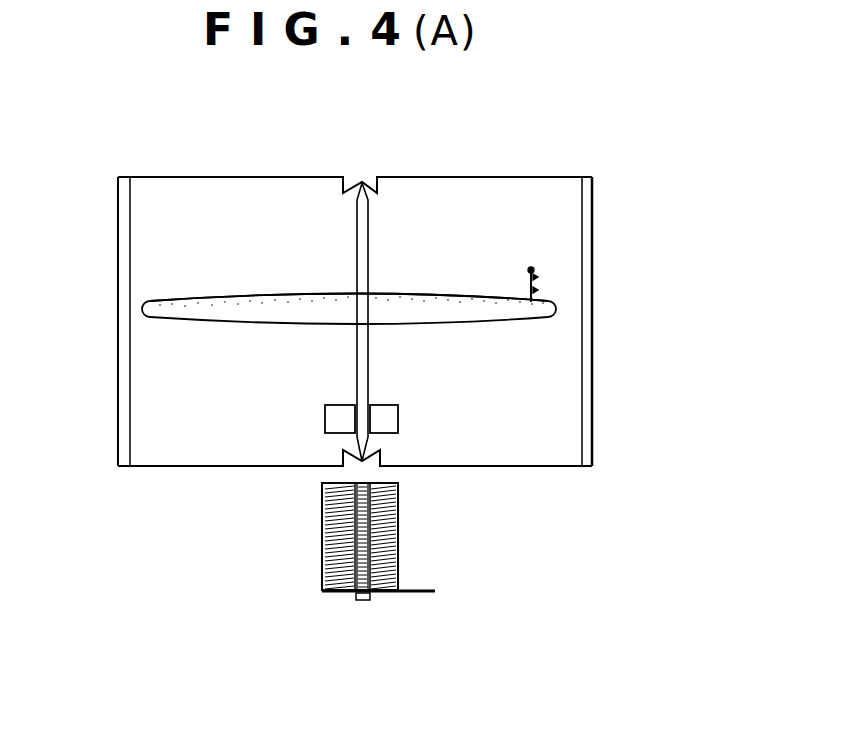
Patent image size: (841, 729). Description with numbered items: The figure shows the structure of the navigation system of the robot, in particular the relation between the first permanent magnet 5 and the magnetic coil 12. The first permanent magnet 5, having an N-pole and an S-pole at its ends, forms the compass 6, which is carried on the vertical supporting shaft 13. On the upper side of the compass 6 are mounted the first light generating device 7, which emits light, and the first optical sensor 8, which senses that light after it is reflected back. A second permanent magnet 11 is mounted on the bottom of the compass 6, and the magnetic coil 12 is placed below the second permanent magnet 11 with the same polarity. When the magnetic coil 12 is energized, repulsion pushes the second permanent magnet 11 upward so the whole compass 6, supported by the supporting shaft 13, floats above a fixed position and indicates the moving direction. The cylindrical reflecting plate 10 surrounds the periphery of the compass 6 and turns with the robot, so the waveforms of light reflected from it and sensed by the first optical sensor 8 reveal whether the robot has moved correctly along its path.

The first permanent magnet 5 is at (443, 296).
The compass 6 is at (217, 296).
The first light generating device 7 is at (536, 277).
The first optical sensor 8 is at (539, 290).
The cylindrical reflecting plate 10 is at (595, 407).
The second permanent magnet 11 is at (387, 425).
The magnetic coil 12 is at (334, 522).
The supporting shaft 13 is at (368, 238).